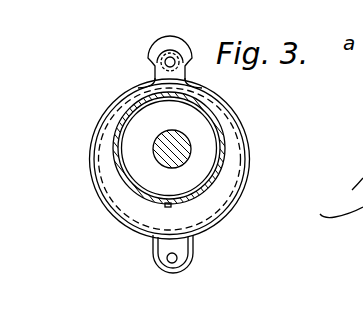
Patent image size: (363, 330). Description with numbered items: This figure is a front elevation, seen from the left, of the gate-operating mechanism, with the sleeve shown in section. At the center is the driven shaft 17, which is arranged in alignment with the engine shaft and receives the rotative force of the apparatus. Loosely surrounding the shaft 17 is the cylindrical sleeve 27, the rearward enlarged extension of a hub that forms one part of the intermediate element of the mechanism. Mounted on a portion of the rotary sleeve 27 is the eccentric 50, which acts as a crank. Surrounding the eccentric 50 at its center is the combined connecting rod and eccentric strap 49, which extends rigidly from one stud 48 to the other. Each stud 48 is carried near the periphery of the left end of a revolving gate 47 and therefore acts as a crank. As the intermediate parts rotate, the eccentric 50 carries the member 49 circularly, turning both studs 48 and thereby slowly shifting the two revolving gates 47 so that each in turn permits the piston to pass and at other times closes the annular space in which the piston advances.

The shaft 17 is at (183, 128).
The cylindrical sleeve 27 is at (223, 143).
The revolving gate 47 is at (158, 44).
The stud 48 is at (165, 62).
The combined connecting rod and eccentric strap 49 is at (257, 160).
The eccentric 50 is at (122, 185).